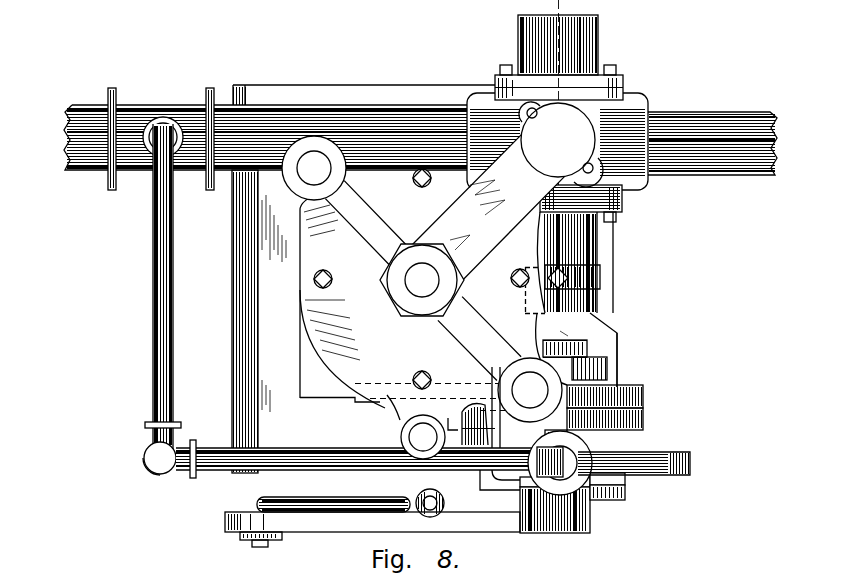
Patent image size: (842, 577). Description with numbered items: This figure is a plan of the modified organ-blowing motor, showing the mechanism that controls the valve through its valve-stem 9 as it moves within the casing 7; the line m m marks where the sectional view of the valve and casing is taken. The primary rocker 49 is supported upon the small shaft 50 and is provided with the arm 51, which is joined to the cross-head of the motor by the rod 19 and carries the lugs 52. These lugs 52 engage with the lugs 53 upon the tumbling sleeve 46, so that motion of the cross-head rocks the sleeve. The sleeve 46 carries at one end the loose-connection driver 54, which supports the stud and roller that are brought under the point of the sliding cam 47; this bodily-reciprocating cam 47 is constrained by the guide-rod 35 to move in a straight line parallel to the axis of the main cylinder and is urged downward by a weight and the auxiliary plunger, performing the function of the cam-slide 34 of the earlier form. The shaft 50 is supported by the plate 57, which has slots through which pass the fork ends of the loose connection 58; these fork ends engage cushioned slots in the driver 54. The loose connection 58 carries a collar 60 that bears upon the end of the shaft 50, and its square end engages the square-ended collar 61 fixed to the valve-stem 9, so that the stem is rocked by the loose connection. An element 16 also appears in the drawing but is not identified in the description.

The casing 7 is at (646, 189).
The valve-stem 9 is at (577, 320).
The section line m m is at (569, 336).
The column 16 is at (600, 244).
The square-ended collar 61 is at (600, 284).
The loose connection 58 is at (619, 346).
The small shaft 50 is at (567, 350).
The collar 60 is at (583, 368).
The plate 57 is at (644, 392).
The loose-connection driver 54 is at (644, 426).
The tumbling sleeve 46 is at (567, 440).
The sliding cam 47 is at (690, 466).
The lugs 53 is at (626, 482).
The lugs 52 is at (626, 496).
The primary rocker 49 is at (592, 512).
The guide-rod 35 is at (416, 427).
The cam-slide 34 is at (454, 425).
The rod 19 is at (320, 497).
The arm 51 is at (372, 529).